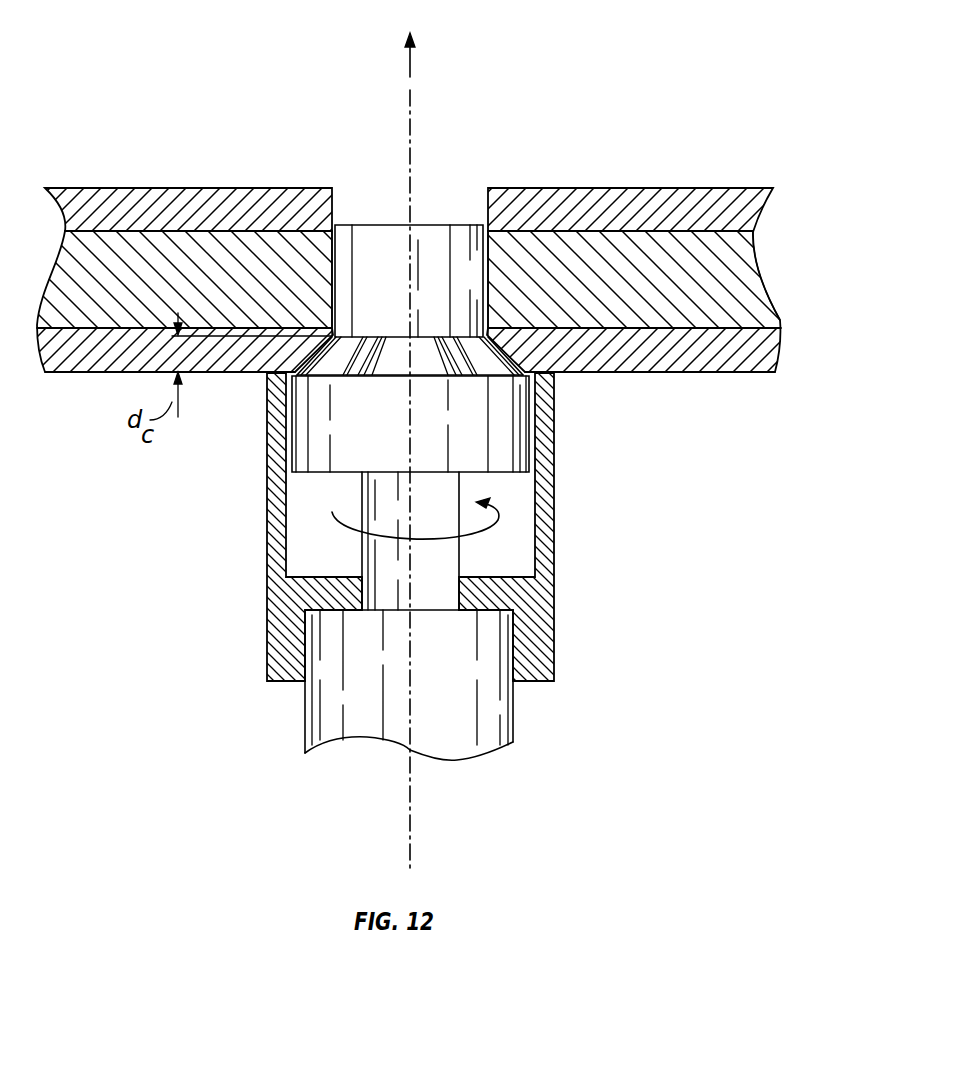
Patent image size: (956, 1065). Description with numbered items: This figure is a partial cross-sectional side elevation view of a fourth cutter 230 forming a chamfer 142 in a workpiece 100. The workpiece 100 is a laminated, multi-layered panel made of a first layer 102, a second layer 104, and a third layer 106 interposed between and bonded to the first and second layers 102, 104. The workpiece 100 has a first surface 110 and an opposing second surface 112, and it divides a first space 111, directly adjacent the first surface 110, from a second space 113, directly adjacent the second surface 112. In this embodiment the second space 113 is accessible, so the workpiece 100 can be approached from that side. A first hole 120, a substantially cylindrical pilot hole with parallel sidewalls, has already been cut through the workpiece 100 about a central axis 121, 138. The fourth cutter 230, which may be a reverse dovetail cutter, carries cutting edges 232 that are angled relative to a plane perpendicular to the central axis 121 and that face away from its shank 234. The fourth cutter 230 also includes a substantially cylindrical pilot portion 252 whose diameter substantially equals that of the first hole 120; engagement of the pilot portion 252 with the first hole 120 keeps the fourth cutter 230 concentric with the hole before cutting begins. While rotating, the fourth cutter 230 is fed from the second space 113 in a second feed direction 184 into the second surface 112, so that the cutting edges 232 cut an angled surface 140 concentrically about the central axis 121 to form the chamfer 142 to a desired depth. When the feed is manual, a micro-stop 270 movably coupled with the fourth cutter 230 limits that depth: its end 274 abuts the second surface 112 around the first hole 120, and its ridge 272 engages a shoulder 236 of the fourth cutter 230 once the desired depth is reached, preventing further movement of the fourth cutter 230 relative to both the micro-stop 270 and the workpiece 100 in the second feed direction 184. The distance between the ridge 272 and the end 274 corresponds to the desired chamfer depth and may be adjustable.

The workpiece 100 is at (432, 309).
The first layer 102 is at (588, 207).
The second layer 104 is at (722, 343).
The third layer 106 is at (773, 274).
The first surface 110 is at (115, 188).
The first space 111 is at (214, 137).
The second surface 112 is at (118, 372).
The second space 113 is at (128, 508).
The first hole 120 is at (342, 208).
The central axis 121 is at (355, 481).
The axis of rotation 138 is at (410, 792).
The angled surface 140 is at (313, 355).
The chamfer 142 is at (502, 360).
The second feed direction 184 is at (410, 63).
The fourth cutter 230 is at (361, 557).
The cutting edges 232 is at (353, 360).
The shank 234 is at (385, 505).
The shoulder 236 is at (483, 607).
The pilot portion 252 is at (372, 257).
The micro-stop 270 is at (553, 529).
The ridge 272 is at (483, 576).
The end 274 is at (276, 377).